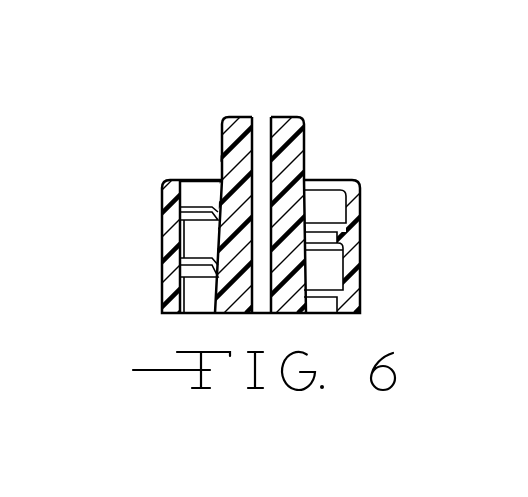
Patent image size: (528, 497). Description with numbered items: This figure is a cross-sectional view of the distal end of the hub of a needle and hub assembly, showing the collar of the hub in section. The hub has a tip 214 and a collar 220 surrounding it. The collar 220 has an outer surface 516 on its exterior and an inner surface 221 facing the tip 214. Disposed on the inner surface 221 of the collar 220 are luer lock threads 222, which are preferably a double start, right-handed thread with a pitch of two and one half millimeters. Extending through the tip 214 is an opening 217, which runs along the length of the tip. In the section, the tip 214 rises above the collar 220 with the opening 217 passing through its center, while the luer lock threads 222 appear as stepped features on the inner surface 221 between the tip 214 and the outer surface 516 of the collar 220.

The tip 214 is at (304, 118).
The opening 217 is at (260, 124).
The collar 220 is at (376, 210).
The inner surface 221 is at (180, 197).
The luer lock threads 222 is at (177, 212).
The outer surface 516 is at (167, 280).